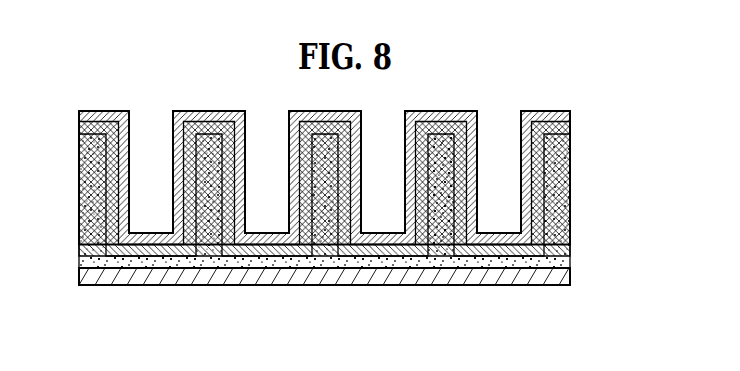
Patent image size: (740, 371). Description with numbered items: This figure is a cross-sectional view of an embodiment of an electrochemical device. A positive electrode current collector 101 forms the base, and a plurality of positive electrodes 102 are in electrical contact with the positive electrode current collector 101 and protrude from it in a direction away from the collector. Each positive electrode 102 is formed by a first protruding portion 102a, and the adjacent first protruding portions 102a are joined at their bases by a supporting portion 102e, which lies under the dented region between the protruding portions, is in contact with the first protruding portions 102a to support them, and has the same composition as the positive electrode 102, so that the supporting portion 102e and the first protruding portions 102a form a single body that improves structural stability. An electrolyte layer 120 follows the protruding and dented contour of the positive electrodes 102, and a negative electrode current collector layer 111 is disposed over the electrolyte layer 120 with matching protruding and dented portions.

The positive electrode current collector 101 is at (567, 275).
The positive electrode 102 is at (567, 192).
The first protruding portion 102a is at (439, 232).
The supporting portion 102e is at (502, 262).
The negative electrode current collector layer 111 is at (565, 116).
The electrolyte layer 120 is at (567, 133).